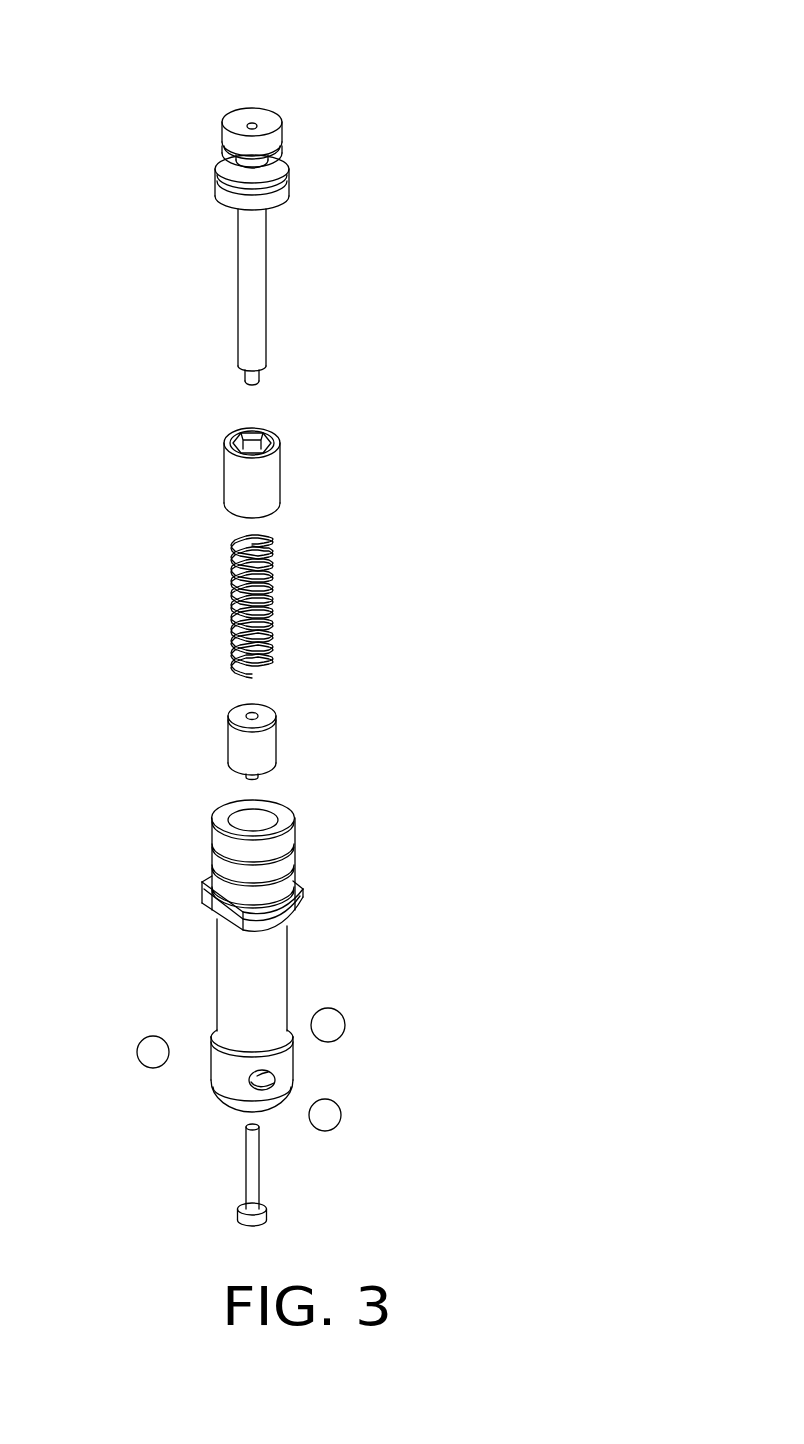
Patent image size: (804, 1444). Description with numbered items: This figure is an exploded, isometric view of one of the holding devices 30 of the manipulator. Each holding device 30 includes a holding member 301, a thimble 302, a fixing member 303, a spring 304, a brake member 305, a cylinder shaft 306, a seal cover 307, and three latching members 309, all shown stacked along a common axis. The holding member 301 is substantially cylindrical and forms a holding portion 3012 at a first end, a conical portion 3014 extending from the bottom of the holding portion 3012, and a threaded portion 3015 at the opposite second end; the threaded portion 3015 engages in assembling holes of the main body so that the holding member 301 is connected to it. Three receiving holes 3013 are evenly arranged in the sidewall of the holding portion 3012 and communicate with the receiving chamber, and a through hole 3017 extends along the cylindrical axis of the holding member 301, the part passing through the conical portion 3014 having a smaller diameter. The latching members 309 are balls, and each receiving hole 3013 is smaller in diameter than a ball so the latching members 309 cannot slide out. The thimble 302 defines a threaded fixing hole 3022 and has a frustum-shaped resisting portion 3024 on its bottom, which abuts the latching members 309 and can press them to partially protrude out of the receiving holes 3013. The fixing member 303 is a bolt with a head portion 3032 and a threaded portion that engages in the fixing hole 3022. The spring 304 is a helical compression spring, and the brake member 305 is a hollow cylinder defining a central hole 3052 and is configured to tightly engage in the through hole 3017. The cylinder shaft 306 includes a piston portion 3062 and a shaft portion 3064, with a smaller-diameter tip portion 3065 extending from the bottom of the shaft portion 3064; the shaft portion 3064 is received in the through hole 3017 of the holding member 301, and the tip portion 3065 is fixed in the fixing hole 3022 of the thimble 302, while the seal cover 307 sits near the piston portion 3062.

The holding device 30 is at (110, 36).
The holding member 301 is at (305, 816).
The holding portion 3012 is at (225, 1067).
The receiving holes 3013 is at (260, 1077).
The conical portion 3014 is at (258, 1103).
The threaded portion 3015 is at (282, 852).
The through hole 3017 is at (247, 822).
The thimble 302 is at (284, 710).
The fixing hole 3022 is at (251, 714).
The resisting portion 3024 is at (257, 776).
The fixing member 303 is at (280, 1200).
The head portion 3032 is at (240, 1213).
The spring 304 is at (272, 583).
The brake member 305 is at (292, 442).
The central hole 3052 is at (248, 442).
The cylinder shaft 306 is at (300, 232).
The piston portion 3062 is at (272, 125).
The shaft portion 3064 is at (253, 280).
The tip portion 3065 is at (256, 378).
The seal cover 307 is at (290, 180).
The latching members 309 is at (330, 1015).